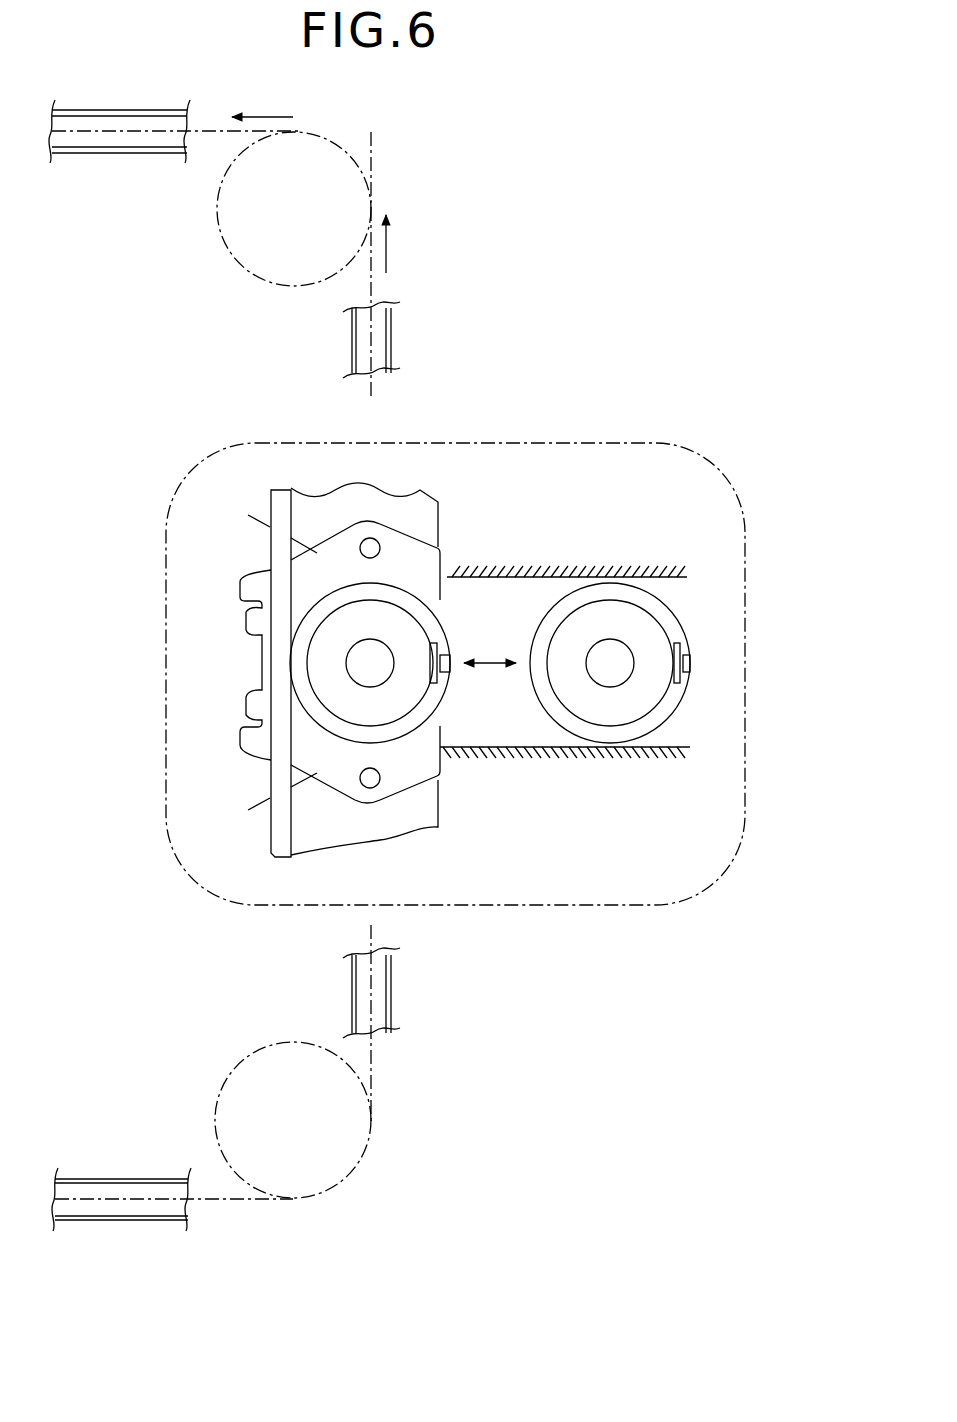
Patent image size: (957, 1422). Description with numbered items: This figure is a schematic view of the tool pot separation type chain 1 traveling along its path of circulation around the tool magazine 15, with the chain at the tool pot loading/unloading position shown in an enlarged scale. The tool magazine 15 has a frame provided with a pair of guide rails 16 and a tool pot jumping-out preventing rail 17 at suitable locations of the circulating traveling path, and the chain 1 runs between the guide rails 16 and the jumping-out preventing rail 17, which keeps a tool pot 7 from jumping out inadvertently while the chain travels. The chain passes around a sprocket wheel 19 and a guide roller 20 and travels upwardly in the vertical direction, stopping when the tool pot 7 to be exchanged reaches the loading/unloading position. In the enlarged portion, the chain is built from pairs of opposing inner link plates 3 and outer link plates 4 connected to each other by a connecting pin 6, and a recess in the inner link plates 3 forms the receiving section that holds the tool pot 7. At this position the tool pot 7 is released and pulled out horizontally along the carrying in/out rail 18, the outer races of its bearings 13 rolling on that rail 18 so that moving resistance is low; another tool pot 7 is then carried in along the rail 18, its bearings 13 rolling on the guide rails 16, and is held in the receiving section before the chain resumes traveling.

The tool pot separation type chain 1 is at (207, 130).
The inner link plate 3 is at (340, 510).
The outer link plate 4 is at (435, 570).
The connecting pin 6 is at (370, 778).
The tool pot 7 is at (640, 635).
The bearing 13 is at (673, 697).
The tool magazine 15 is at (480, 302).
The guide rail 16 is at (120, 155).
The tool pot jumping-out preventing rail 17 is at (118, 110).
The carrying in/out rail 18 is at (610, 750).
The sprocket wheel 19 is at (347, 208).
The guide roller 20 is at (333, 1135).